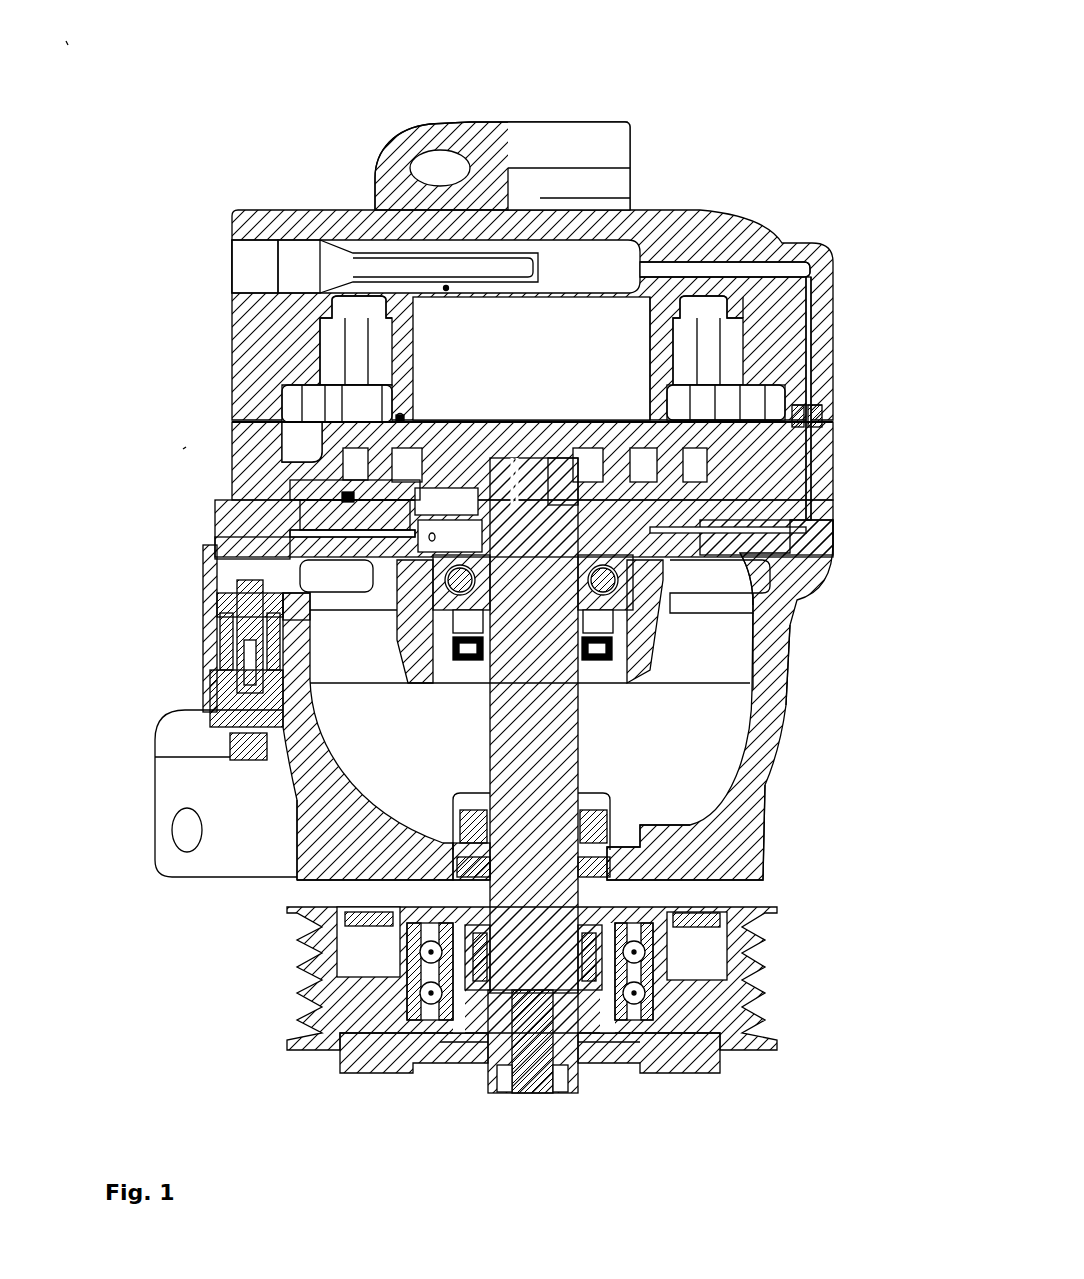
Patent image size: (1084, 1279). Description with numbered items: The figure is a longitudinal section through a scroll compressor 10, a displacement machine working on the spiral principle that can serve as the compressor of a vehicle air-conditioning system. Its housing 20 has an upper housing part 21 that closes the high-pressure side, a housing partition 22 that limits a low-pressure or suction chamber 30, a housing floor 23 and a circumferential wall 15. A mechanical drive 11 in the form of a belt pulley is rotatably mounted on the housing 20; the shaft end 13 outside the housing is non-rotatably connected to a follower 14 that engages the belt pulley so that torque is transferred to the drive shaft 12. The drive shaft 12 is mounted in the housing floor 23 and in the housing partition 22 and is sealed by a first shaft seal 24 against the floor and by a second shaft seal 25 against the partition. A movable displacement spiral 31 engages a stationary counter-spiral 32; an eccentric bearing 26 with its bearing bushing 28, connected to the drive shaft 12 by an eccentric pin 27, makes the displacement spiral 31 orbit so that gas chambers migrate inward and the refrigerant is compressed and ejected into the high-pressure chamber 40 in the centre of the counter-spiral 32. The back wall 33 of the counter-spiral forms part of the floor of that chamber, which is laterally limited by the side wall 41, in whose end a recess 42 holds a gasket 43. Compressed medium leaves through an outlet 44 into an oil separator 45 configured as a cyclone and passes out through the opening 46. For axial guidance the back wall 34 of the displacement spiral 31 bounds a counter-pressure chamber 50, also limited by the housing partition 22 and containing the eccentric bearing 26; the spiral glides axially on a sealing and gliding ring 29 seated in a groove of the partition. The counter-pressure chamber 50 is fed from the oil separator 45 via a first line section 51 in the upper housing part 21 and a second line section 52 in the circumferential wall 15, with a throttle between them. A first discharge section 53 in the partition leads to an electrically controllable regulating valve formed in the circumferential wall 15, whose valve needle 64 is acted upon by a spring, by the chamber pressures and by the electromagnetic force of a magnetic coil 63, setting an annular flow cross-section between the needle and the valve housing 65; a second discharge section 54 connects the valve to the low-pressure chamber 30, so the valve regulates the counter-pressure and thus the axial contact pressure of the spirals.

The scroll compressor 10 is at (110, 98).
The housing 20 is at (183, 449).
The upper housing part 21 is at (690, 226).
The opening 46 is at (232, 252).
The oil separator 45 is at (312, 262).
The outlet 44 is at (445, 286).
The first line section 51 is at (765, 265).
The side wall 41 is at (660, 355).
The counter-spiral 32 is at (345, 430).
The back wall 33 is at (598, 420).
The high-pressure chamber 40 is at (455, 352).
The recess 42 is at (402, 414).
The gasket 43 is at (404, 418).
The counter-pressure chamber 50 is at (455, 500).
The displacement spiral 31 is at (385, 495).
The sealing and gliding ring 29 is at (385, 520).
The back wall 34 is at (290, 530).
The first discharge section 53 is at (250, 540).
The second line section 52 is at (795, 525).
The eccentric pin 27 is at (520, 545).
The bearing bushing 28 is at (560, 462).
The second shaft seal 25 is at (635, 700).
The housing 65 is at (285, 620).
The valve needle 64 is at (240, 605).
The magnetic coil 63 is at (208, 655).
The second discharge section 54 is at (240, 580).
The housing partition 22 is at (650, 655).
The circumferential wall 15 is at (785, 630).
The eccentric bearing 26 is at (770, 597).
The drive shaft 12 is at (765, 880).
The housing floor 23 is at (420, 880).
The low-pressure chamber 30 is at (370, 780).
The first shaft seal 24 is at (600, 832).
The mechanical drive 11 is at (745, 1040).
The follower 14 is at (672, 1062).
The shaft end 13 is at (530, 1020).